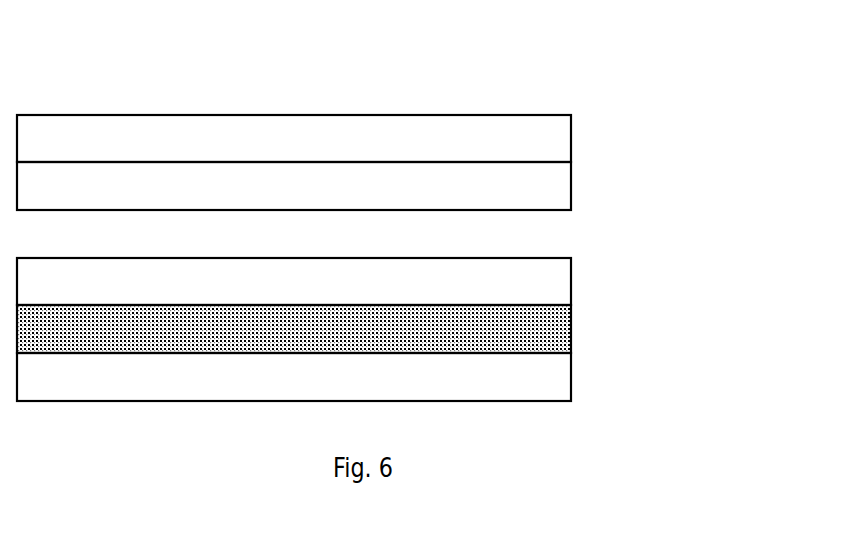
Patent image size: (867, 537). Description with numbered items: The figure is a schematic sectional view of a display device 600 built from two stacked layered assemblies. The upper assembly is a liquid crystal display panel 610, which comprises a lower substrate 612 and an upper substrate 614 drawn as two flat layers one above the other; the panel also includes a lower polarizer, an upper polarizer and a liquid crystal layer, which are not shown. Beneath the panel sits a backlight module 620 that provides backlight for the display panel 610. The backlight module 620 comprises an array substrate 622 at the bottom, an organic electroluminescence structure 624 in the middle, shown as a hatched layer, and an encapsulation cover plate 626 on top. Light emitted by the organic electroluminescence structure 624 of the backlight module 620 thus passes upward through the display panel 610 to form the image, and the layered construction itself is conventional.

The display device 600 is at (440, 61).
The display panel 610 is at (687, 115).
The lower substrate 612 is at (575, 190).
The upper substrate 614 is at (575, 143).
The backlight module 620 is at (687, 262).
The array substrate 622 is at (575, 370).
The organic electroluminescence structure 624 is at (575, 323).
The encapsulation cover plate 626 is at (575, 275).